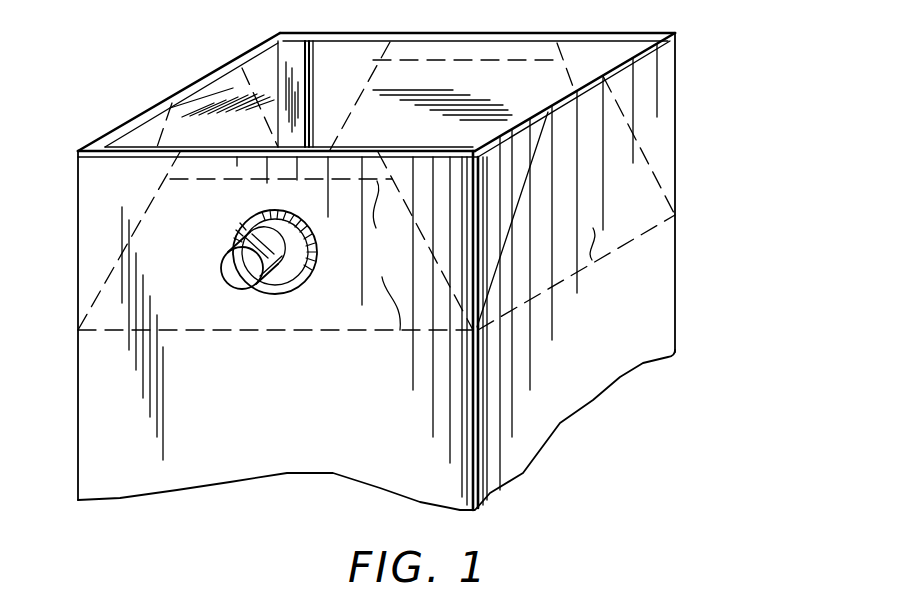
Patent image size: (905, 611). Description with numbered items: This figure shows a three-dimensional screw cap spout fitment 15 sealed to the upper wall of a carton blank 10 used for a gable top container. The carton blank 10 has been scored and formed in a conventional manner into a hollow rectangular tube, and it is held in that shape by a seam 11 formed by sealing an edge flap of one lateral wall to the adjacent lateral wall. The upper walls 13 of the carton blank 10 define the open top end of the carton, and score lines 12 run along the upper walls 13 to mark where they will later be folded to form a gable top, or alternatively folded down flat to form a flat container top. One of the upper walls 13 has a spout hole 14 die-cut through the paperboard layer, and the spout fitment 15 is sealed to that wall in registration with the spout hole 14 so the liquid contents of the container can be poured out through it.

The carton blank 10 is at (697, 216).
The seam 11 is at (292, 57).
The score lines 12 is at (433, 254).
The upper walls 13 is at (215, 141).
The spout hole 14 is at (313, 262).
The spout fitment 15 is at (292, 290).